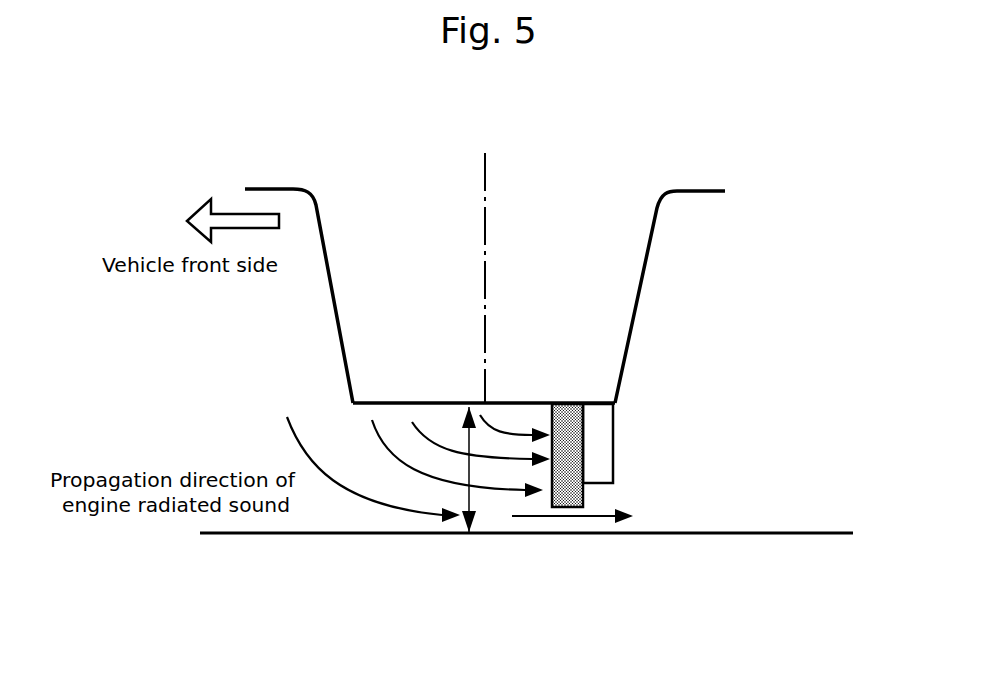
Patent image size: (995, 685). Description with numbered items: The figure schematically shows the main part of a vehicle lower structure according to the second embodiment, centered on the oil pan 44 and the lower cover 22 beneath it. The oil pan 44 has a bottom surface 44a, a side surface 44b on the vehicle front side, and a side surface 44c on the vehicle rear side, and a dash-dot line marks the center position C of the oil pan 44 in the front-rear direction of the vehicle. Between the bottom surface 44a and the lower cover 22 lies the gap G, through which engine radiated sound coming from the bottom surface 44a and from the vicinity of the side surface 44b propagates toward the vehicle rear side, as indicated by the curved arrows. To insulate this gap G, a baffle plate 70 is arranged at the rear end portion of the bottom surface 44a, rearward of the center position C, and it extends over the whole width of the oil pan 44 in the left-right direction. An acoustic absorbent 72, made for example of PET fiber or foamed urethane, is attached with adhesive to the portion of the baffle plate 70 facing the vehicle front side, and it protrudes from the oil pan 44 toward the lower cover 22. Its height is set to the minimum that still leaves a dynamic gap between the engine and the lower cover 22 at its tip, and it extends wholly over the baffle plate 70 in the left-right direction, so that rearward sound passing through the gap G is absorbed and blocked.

The oil pan 44 is at (606, 165).
The bottom surface of the oil pan 44a is at (420, 403).
The side surface of the oil pan on the vehicle front side 44b is at (334, 305).
The side surface of the oil pan on the vehicle rear side 44c is at (637, 303).
The baffle plate 70 is at (613, 435).
The acoustic absorbent 72 is at (585, 470).
The lower cover 22 is at (772, 533).
The center position C is at (485, 405).
The gap G is at (473, 497).